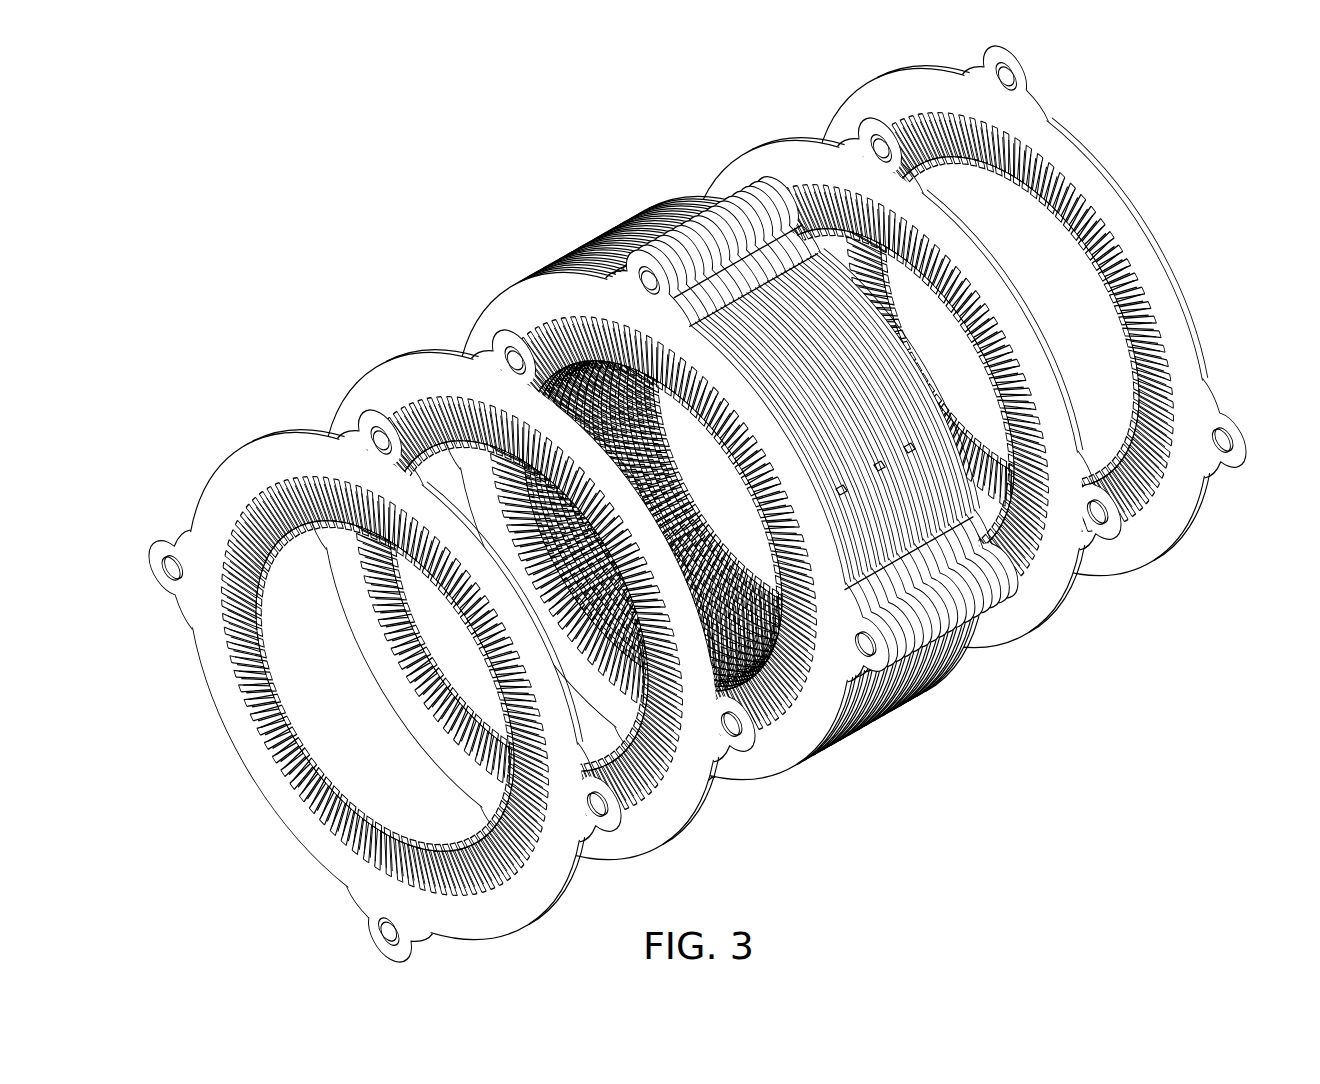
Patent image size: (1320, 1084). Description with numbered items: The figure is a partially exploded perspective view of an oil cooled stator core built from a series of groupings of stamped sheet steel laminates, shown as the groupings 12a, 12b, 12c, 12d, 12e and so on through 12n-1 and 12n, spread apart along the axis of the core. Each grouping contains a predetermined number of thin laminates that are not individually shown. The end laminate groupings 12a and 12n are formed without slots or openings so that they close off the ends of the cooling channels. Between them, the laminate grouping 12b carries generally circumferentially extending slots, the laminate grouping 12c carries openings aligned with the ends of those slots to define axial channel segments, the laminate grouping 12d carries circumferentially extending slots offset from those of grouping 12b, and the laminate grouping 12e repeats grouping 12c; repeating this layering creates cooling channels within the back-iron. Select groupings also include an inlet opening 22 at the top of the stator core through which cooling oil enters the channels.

The end laminate grouping 12a is at (300, 430).
The laminate grouping 12b is at (445, 352).
The laminate grouping 12c is at (568, 273).
The laminate grouping 12d is at (833, 748).
The laminate grouping 12e is at (868, 728).
The laminate grouping 12n-1 is at (805, 137).
The end laminate grouping 12n is at (1094, 168).
The inlet opening 22 is at (910, 449).